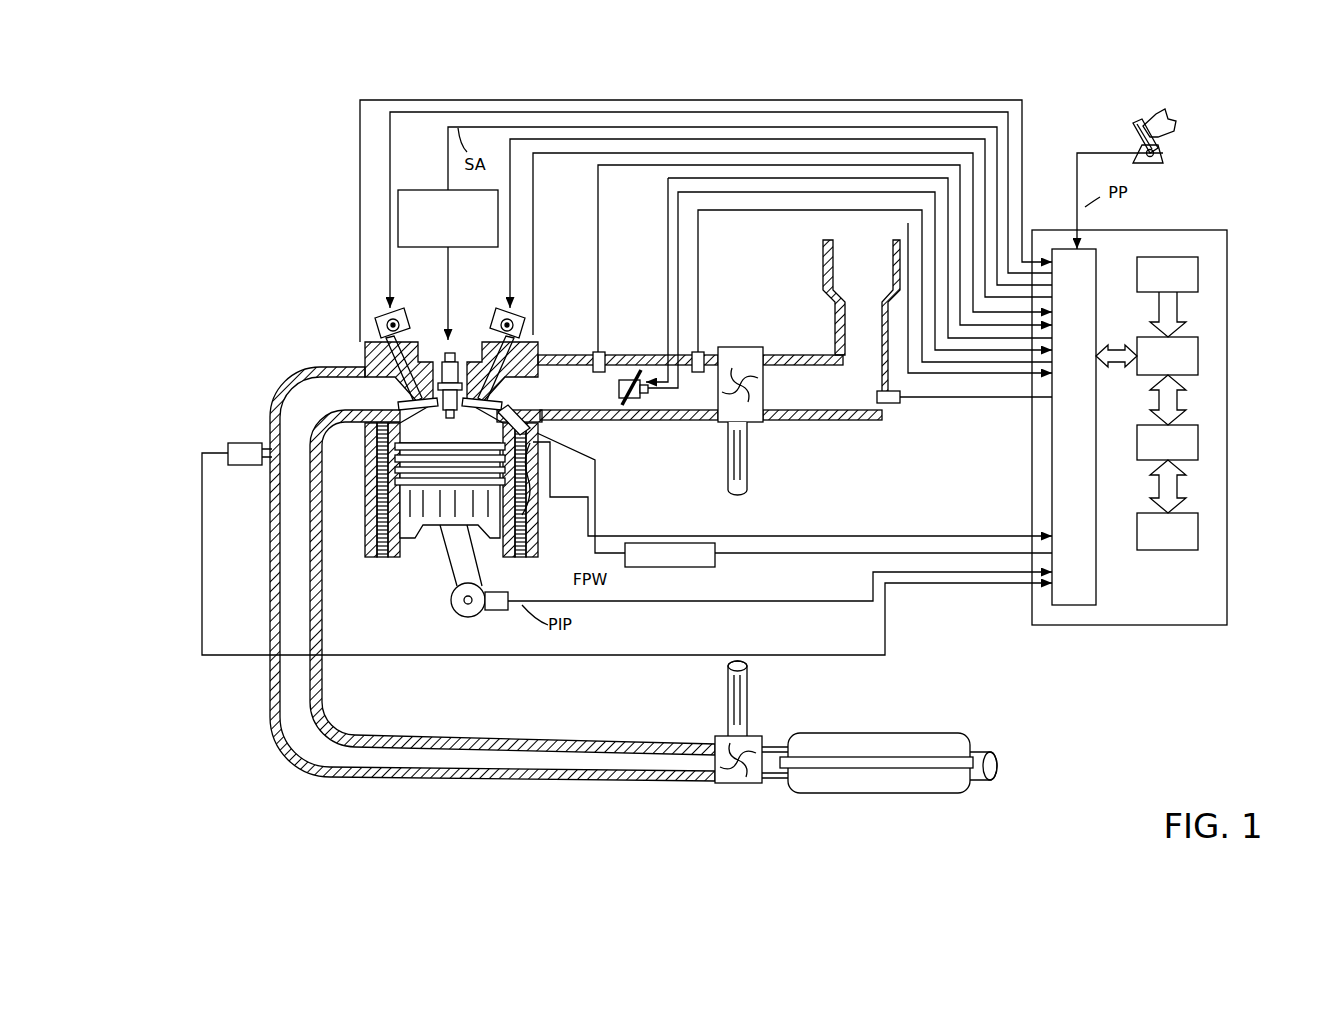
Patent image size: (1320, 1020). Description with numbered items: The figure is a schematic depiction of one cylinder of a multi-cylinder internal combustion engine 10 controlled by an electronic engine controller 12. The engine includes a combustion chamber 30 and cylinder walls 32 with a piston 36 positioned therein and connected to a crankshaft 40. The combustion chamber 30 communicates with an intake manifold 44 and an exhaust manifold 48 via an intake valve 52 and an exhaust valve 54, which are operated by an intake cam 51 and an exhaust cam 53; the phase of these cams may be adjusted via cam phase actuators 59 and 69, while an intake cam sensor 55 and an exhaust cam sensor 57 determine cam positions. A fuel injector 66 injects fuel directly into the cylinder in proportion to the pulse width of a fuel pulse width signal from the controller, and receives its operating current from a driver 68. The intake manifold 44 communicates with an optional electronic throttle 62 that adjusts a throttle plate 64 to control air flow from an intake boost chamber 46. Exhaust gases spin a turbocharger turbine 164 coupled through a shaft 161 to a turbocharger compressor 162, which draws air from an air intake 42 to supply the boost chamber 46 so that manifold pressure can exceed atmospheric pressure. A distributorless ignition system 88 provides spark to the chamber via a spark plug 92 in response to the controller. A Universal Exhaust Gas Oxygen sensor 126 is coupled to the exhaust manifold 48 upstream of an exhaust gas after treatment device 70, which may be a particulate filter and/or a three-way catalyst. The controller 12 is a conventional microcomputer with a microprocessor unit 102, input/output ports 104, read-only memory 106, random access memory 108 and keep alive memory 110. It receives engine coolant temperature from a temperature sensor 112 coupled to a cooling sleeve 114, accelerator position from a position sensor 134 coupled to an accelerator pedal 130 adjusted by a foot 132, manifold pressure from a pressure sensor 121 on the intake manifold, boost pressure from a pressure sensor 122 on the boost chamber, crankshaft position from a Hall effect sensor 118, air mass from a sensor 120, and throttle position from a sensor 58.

The internal combustion engine 10 is at (303, 300).
The electronic engine controller 12 is at (1227, 233).
The combustion chamber 30 is at (447, 430).
The cylinder walls 32 is at (400, 552).
The piston 36 is at (435, 515).
The crankshaft 40 is at (462, 615).
The air intake 42 is at (861, 316).
The intake manifold 44 is at (628, 387).
The intake boost chamber 46 is at (783, 387).
The exhaust manifold 48 is at (492, 574).
The intake cam 51 is at (500, 318).
The intake valve 52 is at (492, 403).
The exhaust cam 53 is at (402, 318).
The exhaust valve 54 is at (380, 378).
The intake cam sensor 55 is at (512, 328).
The exhaust cam sensor 57 is at (382, 330).
The throttle position sensor 58 is at (648, 394).
The cam phase actuator 59 is at (465, 352).
The electronic throttle 62 is at (622, 374).
The throttle plate 64 is at (636, 372).
The fuel injector 66 is at (561, 479).
The driver 68 is at (692, 568).
The cam phase actuator 69 is at (390, 313).
The exhaust gas after treatment device 70 is at (843, 794).
The distributorless ignition system 88 is at (409, 190).
The spark plug 92 is at (462, 352).
The microprocessor unit 102 is at (1198, 353).
The input/output ports 104 is at (1097, 257).
The read-only memory 106 is at (1198, 272).
The random access memory 108 is at (1198, 441).
The keep alive memory 110 is at (1198, 530).
The temperature sensor 112 is at (787, 489).
The cooling sleeve 114 is at (533, 527).
The Hall effect sensor 118 is at (494, 612).
The air mass sensor 120 is at (900, 400).
The pressure sensor 121 is at (596, 350).
The pressure sensor 122 is at (702, 352).
The Universal Exhaust Gas Oxygen sensor 126 is at (228, 445).
The accelerator pedal 130 is at (1132, 128).
The foot 132 is at (1176, 122).
The position sensor 134 is at (1163, 153).
The shaft 161 is at (728, 455).
The turbocharger compressor 162 is at (755, 347).
The turbocharger turbine 164 is at (716, 738).